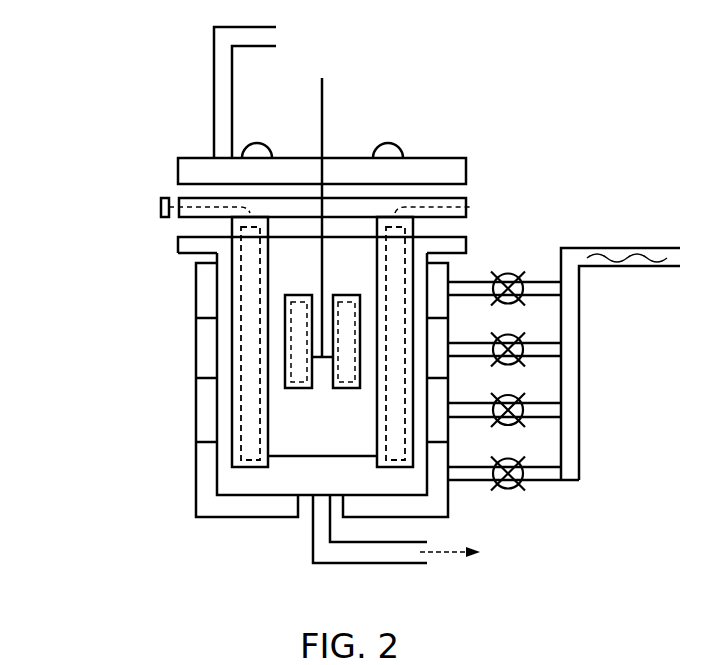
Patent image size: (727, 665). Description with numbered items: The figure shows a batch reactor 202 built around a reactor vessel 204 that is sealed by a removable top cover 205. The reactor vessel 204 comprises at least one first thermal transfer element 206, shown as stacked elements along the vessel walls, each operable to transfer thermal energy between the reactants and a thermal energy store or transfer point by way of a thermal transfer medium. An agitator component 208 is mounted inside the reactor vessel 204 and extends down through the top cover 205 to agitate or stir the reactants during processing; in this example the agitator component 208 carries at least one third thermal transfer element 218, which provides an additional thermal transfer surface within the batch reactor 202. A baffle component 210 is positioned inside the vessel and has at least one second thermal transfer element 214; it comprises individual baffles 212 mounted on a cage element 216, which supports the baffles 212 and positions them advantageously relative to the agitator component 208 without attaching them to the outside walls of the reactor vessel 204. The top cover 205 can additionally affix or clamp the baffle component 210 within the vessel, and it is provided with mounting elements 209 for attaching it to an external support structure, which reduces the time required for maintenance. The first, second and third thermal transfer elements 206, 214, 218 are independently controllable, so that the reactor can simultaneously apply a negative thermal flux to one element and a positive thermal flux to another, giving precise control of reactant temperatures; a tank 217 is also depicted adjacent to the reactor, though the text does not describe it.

The batch reactor 202 is at (150, 108).
The reactor vessel 204 is at (475, 240).
The removable top cover 205 is at (343, 158).
The first thermal transfer element 206 is at (195, 297).
The agitator component 208 is at (323, 90).
The mounting elements 209 is at (260, 140).
The baffle component 210 is at (469, 205).
The baffles 212 is at (252, 465).
The second thermal transfer element 214 is at (247, 342).
The cage element 216 is at (443, 198).
The quench tank 217 is at (637, 260).
The third thermal transfer element 218 is at (297, 388).